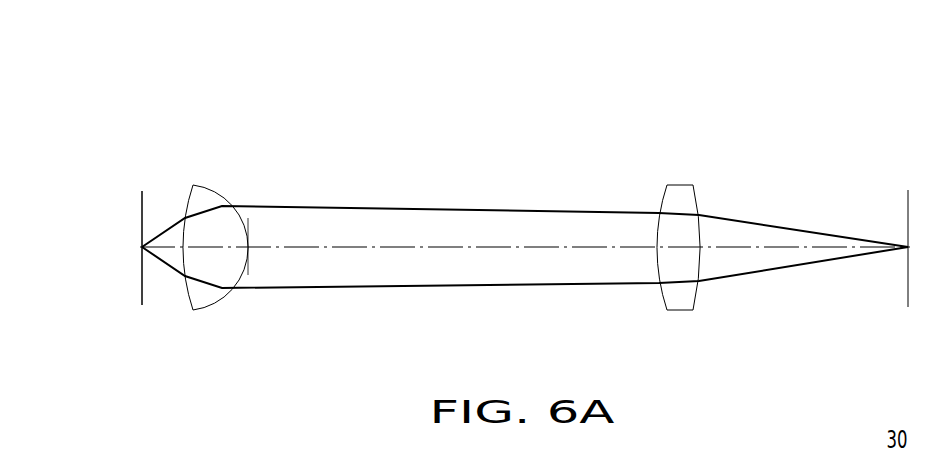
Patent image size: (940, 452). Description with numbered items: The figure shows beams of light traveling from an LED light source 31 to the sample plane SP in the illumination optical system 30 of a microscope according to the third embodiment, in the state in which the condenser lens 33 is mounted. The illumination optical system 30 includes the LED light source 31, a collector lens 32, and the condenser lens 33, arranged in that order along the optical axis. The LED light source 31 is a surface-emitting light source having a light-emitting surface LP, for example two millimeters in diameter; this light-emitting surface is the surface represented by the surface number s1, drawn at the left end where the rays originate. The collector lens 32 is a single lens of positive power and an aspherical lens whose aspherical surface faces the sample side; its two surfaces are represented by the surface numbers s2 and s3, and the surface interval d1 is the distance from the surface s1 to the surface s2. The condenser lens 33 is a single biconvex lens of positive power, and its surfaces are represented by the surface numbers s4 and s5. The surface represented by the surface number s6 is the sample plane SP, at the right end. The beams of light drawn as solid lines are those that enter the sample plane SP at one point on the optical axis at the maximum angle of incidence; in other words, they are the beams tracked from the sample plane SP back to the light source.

The illumination optical system 30 is at (878, 65).
The LED light source 31 is at (142, 312).
The collector lens 32 is at (236, 235).
The condenser lens 33 is at (687, 237).
The surface number s1 (light-emitting surface LP) s1 is at (145, 207).
The surface number s2 is at (187, 198).
The surface number s3 is at (213, 190).
The surface number s4 is at (665, 198).
The surface number s5 is at (702, 198).
The surface number s6 (sample plane SP) s6 is at (908, 212).